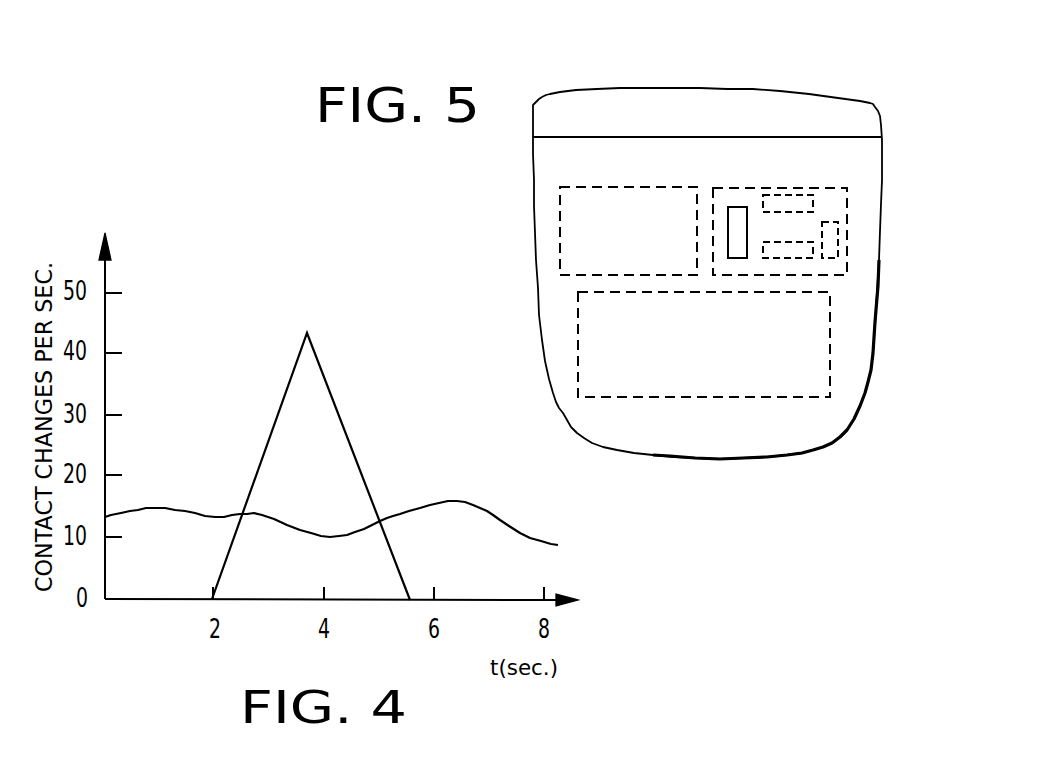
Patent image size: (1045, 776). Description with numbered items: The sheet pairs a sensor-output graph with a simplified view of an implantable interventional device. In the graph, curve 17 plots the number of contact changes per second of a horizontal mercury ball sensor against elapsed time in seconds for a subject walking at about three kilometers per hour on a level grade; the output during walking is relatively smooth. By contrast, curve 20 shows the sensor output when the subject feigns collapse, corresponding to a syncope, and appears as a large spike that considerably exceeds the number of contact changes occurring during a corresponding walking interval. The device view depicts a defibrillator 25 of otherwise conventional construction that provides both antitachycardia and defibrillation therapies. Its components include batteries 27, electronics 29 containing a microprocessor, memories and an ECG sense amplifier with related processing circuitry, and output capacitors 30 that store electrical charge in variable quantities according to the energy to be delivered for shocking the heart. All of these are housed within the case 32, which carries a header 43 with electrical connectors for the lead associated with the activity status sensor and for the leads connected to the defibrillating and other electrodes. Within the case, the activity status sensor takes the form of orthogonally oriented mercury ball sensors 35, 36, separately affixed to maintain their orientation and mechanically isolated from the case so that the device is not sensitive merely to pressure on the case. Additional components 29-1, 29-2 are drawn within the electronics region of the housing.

In FIG. 4, the curve 17 is at (435, 502).
In FIG. 4, the curve 20 is at (267, 432).
In FIG. 5, the defibrillator 25 is at (593, 84).
In FIG. 5, the batteries 27 is at (585, 330).
In FIG. 5, the electronics 29 is at (838, 214).
In FIG. 5, the electronic circuit component 29-1 is at (833, 248).
In FIG. 5, the electronic circuit component 29-2 is at (790, 195).
In FIG. 5, the output capacitors 30 is at (570, 218).
In FIG. 5, the case 32 is at (785, 442).
In FIG. 5, the mercury ball sensor 35 is at (728, 232).
In FIG. 5, the mercury ball sensor 36 is at (790, 262).
In FIG. 5, the header 43 is at (762, 120).